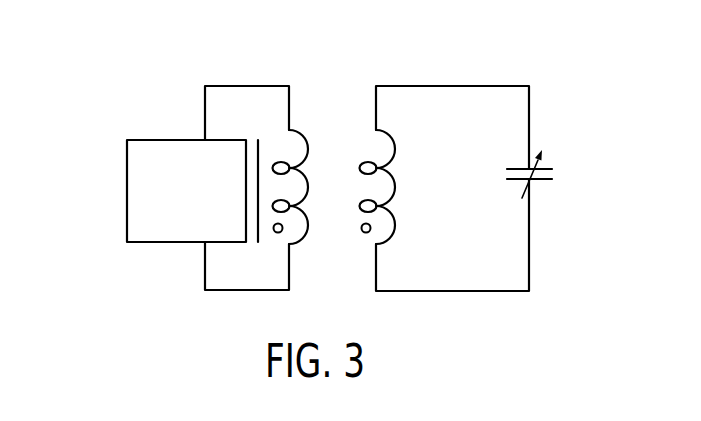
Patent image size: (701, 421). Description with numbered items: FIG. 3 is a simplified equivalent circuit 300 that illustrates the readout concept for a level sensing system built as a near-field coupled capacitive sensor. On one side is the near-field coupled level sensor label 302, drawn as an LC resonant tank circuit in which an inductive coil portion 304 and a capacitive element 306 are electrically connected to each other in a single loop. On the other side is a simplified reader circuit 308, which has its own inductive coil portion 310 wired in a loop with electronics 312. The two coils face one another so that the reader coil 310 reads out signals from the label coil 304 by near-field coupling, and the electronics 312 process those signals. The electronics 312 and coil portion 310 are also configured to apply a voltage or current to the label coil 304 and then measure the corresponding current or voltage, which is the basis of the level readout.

The equivalent circuit 300 is at (146, 88).
The near-field coupled level sensor label 302 is at (482, 85).
The inductive coil portion 304 is at (390, 135).
The capacitive element 306 is at (543, 162).
The reader circuit 308 is at (119, 126).
The inductive coil portion 310 is at (307, 138).
The electronics 312 is at (175, 230).